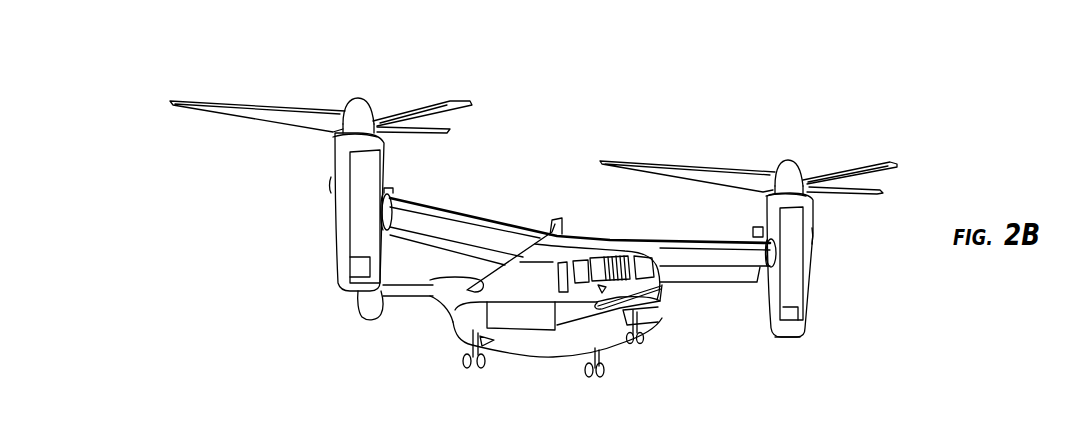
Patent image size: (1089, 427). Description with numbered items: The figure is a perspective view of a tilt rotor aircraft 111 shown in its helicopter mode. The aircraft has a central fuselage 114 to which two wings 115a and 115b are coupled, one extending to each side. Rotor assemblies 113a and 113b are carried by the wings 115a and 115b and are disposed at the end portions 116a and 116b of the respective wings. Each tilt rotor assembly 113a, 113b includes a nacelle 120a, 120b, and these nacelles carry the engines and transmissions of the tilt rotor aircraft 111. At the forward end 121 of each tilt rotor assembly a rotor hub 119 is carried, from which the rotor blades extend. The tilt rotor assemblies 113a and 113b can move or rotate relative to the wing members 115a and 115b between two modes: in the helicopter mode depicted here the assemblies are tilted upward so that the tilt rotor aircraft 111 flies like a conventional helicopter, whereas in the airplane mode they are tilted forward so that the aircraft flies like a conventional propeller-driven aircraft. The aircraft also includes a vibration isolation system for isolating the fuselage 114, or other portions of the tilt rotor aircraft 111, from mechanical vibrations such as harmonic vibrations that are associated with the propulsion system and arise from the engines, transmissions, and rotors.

The tilt rotor aircraft 111 is at (428, 335).
The rotor assembly 113a is at (815, 271).
The rotor assembly 113b is at (322, 229).
The fuselage 114 is at (553, 353).
The wing 115a is at (687, 243).
The wing 115b is at (460, 210).
The end portion 116a is at (755, 298).
The end portion 116b is at (399, 187).
The rotor hub 119 is at (350, 108).
The nacelle 120a is at (800, 322).
The nacelle 120b is at (345, 280).
The forward end 121 is at (337, 147).